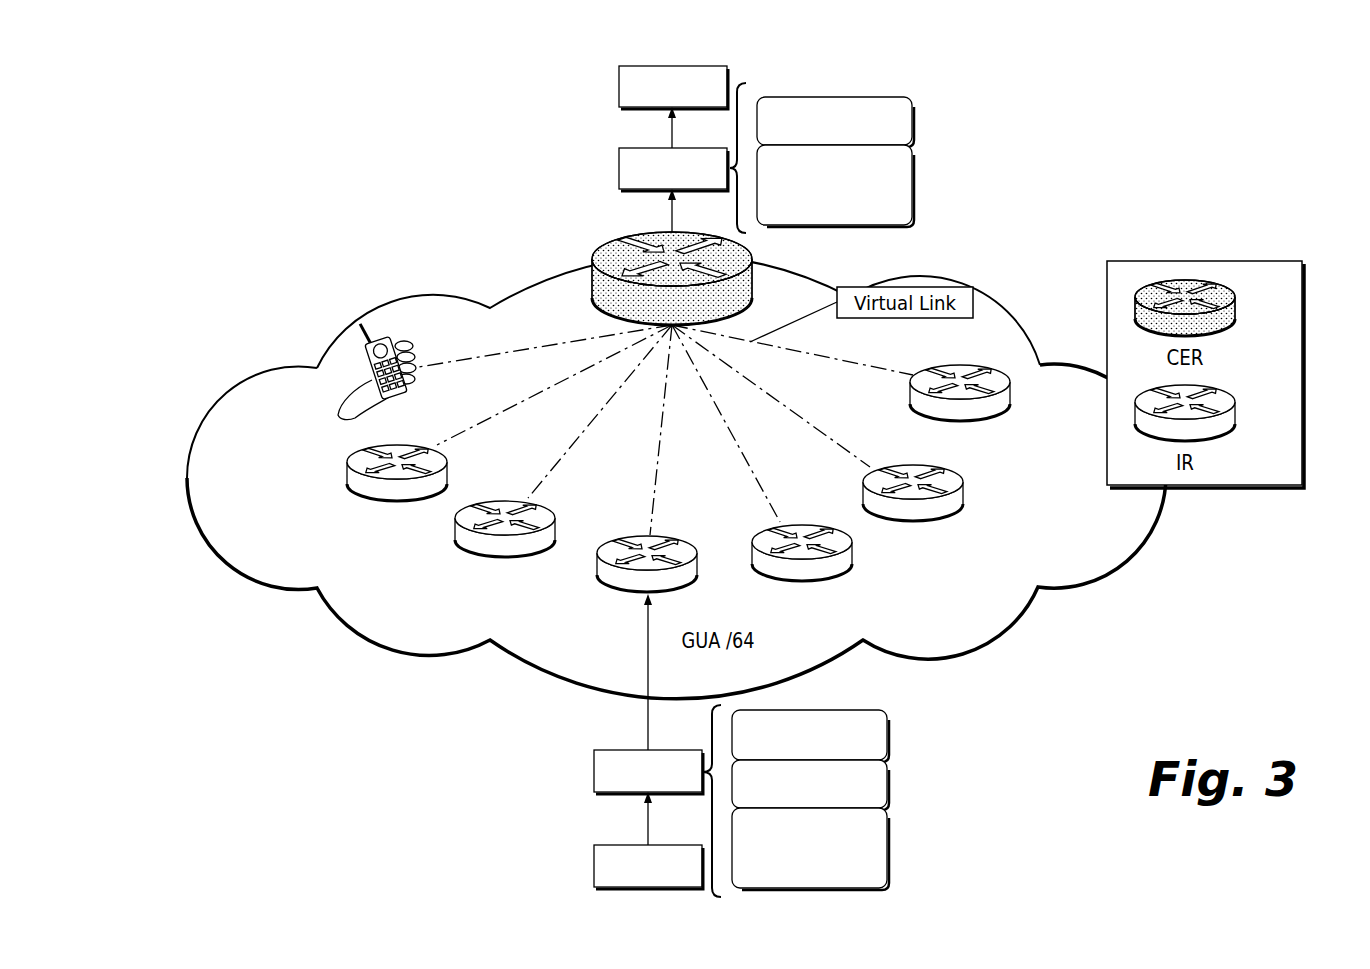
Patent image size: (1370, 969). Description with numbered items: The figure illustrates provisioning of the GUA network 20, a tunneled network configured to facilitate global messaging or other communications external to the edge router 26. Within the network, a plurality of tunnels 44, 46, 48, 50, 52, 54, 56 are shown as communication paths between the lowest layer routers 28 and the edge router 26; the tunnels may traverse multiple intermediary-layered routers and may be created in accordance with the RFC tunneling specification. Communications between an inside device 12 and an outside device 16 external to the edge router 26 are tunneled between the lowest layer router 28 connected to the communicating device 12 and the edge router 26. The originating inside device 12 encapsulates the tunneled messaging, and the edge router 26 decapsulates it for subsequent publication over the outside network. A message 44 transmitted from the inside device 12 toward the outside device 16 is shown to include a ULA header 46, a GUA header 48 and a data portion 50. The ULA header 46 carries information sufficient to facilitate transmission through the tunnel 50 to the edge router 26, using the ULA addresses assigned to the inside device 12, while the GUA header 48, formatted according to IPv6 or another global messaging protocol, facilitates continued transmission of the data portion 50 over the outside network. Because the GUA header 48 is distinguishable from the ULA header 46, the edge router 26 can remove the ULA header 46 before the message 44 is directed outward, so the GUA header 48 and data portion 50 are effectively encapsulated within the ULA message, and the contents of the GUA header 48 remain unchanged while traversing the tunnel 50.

The inside device 12 is at (594, 866).
The outside device 16 is at (619, 87).
The GUA network 20 is at (1037, 249).
The edge router 26 is at (608, 243).
The lowest layer router 28 is at (345, 475).
The message 44 is at (507, 352).
The ULA header 46 is at (513, 407).
The GUA header 48 is at (560, 460).
The data portion 50 is at (655, 494).
The tunnel 52 is at (760, 482).
The tunnel 54 is at (817, 428).
The tunnel 56 is at (847, 363).